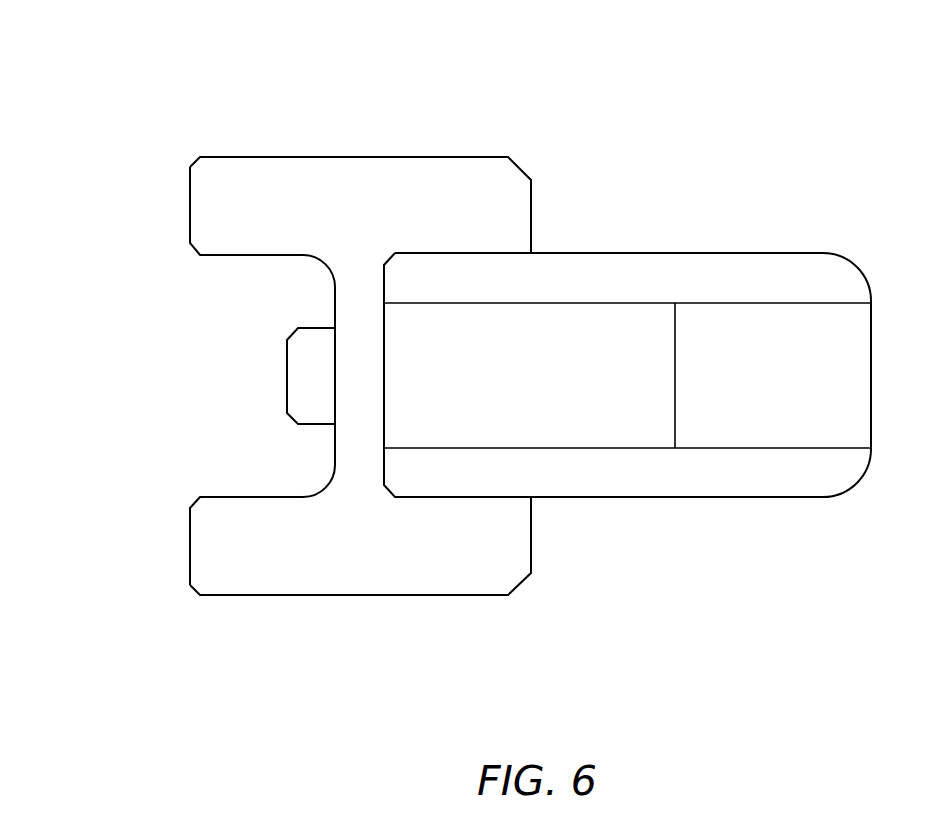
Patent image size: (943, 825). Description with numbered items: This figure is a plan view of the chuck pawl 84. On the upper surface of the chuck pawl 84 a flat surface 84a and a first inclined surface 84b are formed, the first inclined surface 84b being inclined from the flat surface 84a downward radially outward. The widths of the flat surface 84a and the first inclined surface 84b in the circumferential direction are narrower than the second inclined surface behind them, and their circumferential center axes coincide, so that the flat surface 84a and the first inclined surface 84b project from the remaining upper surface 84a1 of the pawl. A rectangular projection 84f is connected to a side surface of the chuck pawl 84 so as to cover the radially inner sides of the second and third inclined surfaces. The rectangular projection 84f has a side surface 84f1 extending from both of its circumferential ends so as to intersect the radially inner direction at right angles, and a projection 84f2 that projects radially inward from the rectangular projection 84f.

The chuck pawl 84 is at (142, 61).
The side surface 84f1 is at (383, 197).
The upper surface 84a1 is at (473, 288).
The flat surface 84a is at (588, 343).
The first inclined surface 84b is at (758, 347).
The projection 84f2 is at (298, 398).
The rectangular projection 84f is at (533, 539).